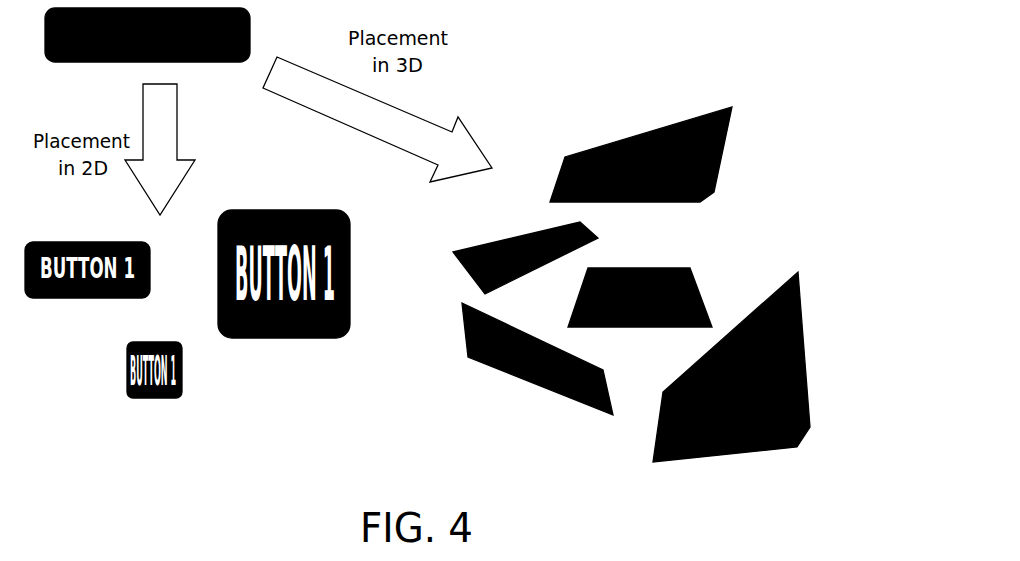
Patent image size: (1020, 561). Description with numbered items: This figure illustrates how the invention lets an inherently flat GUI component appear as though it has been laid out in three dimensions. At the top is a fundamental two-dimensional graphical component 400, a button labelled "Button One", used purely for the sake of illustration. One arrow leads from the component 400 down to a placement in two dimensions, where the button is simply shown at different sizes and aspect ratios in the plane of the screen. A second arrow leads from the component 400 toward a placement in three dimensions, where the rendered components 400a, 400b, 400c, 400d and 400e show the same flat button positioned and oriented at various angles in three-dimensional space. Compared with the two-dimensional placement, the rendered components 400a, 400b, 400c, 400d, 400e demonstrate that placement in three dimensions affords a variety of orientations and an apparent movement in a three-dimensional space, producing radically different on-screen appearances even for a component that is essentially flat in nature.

The fundamental 2D graphical component 400 is at (71, 62).
The rendered component 400a is at (733, 109).
The rendered component 400b is at (598, 238).
The rendered component 400c is at (692, 268).
The rendered component 400d is at (590, 362).
The rendered component 400e is at (695, 456).